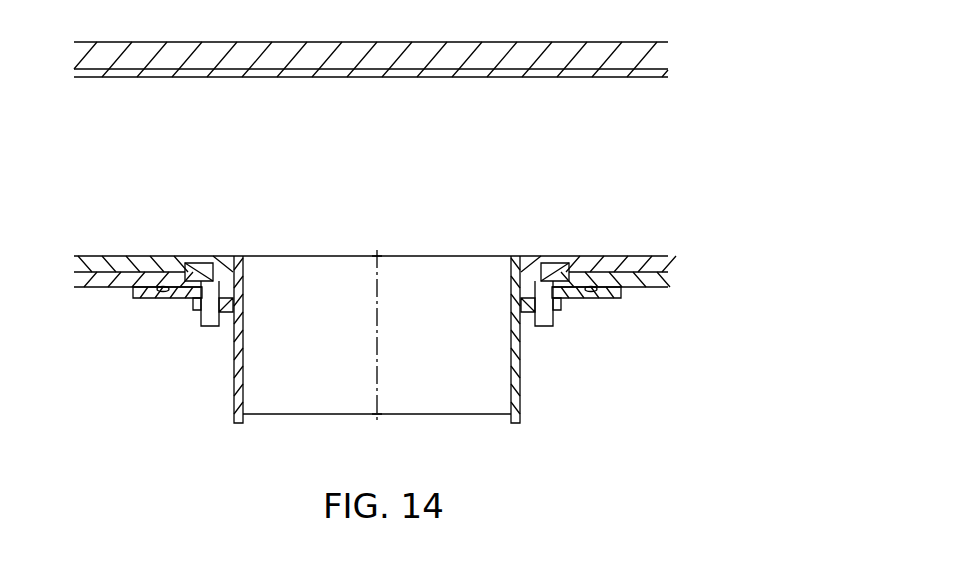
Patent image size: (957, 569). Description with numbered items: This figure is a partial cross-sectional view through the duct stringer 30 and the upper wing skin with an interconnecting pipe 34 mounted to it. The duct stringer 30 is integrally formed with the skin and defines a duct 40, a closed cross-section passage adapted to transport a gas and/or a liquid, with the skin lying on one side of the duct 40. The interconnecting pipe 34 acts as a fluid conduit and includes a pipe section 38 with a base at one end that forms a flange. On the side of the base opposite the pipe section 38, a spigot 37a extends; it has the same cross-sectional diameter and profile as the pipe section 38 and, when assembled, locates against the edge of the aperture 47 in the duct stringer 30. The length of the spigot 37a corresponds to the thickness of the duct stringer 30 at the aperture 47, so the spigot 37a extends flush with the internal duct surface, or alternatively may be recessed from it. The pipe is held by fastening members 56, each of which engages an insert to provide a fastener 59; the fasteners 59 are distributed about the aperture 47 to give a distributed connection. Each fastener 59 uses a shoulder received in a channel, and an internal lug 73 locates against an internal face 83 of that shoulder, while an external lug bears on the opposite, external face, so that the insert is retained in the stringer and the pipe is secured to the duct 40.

The duct stringer 30 is at (668, 58).
The duct 40 is at (653, 192).
The spigot 37a is at (256, 256).
The internal lug 73 is at (199, 256).
The internal face 83 is at (553, 257).
The fastening member 56 is at (180, 298).
The fastener 59 is at (193, 344).
The pipe section 38 is at (243, 345).
The interconnecting pipe 34 is at (233, 412).
The aperture 47 is at (420, 287).